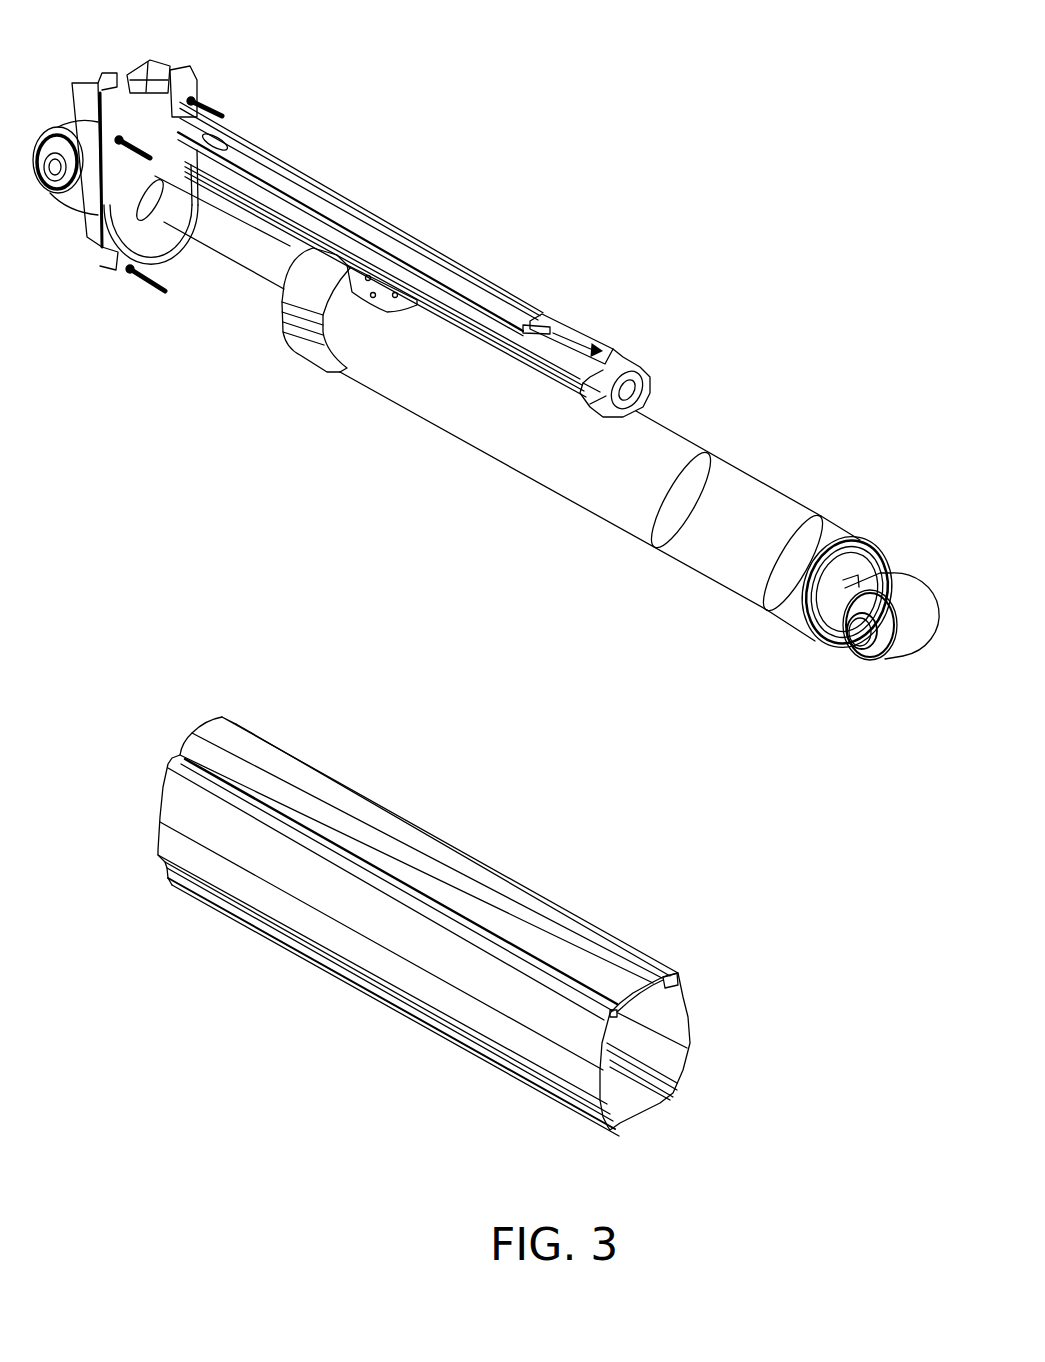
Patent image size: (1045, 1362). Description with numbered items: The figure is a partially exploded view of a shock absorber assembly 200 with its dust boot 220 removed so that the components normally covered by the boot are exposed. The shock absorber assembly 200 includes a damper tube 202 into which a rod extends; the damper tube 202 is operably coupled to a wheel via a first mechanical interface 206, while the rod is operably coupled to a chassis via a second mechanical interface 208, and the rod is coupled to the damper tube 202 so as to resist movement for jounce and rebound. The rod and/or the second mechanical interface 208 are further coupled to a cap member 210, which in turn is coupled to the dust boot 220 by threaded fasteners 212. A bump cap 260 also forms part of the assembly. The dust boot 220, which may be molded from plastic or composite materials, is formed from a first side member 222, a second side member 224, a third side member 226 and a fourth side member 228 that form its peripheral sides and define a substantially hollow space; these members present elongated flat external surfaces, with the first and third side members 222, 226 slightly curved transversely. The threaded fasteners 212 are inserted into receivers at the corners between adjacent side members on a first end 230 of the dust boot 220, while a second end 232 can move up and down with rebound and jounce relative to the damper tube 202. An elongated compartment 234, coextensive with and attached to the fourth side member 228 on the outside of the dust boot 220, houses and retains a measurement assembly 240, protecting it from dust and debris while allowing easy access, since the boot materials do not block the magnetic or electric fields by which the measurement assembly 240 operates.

The shock absorber assembly 200 is at (752, 212).
The damper tube 202 is at (195, 237).
The first mechanical interface 206 is at (875, 659).
The second mechanical interface 208 is at (46, 140).
The cap member 210 is at (187, 82).
The threaded fasteners 212 is at (219, 116).
The dust boot 220 is at (301, 991).
The first side member 222 is at (523, 1020).
The second side member 224 is at (647, 1110).
The third side member 226 is at (682, 1043).
The fourth side member 228 is at (620, 1007).
The first end 230 is at (231, 707).
The second end 232 is at (700, 991).
The elongated compartment 234 is at (440, 860).
The measurement assembly 240 is at (377, 243).
The bump cap 260 is at (305, 335).